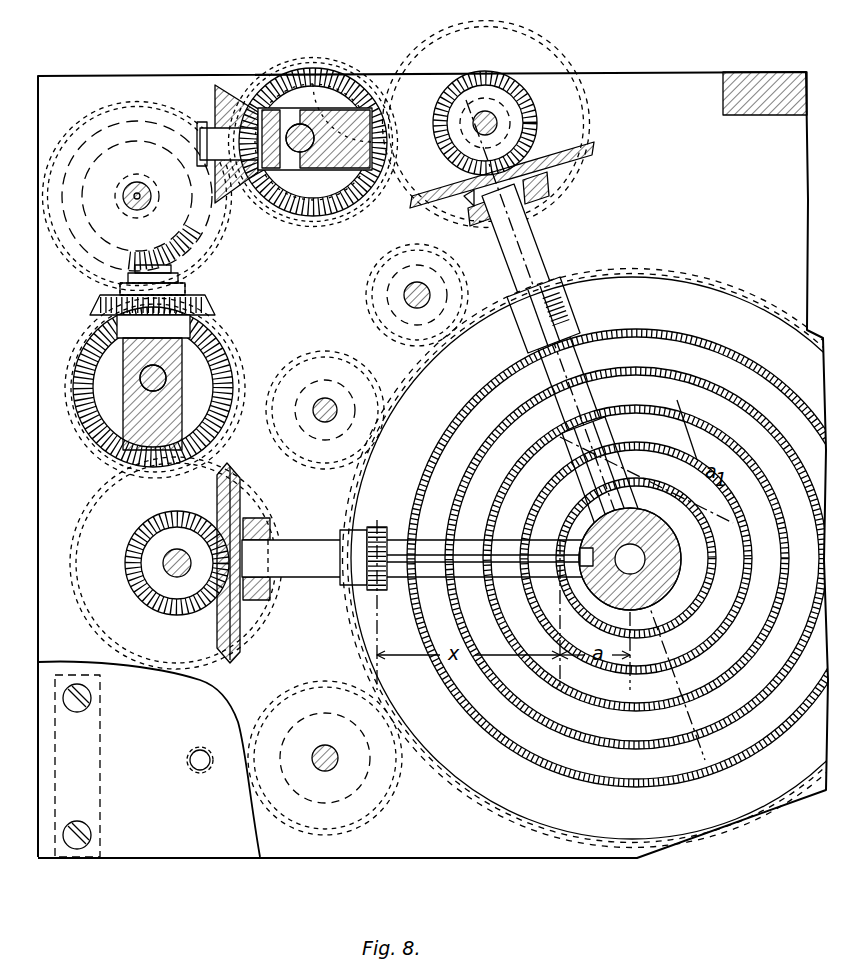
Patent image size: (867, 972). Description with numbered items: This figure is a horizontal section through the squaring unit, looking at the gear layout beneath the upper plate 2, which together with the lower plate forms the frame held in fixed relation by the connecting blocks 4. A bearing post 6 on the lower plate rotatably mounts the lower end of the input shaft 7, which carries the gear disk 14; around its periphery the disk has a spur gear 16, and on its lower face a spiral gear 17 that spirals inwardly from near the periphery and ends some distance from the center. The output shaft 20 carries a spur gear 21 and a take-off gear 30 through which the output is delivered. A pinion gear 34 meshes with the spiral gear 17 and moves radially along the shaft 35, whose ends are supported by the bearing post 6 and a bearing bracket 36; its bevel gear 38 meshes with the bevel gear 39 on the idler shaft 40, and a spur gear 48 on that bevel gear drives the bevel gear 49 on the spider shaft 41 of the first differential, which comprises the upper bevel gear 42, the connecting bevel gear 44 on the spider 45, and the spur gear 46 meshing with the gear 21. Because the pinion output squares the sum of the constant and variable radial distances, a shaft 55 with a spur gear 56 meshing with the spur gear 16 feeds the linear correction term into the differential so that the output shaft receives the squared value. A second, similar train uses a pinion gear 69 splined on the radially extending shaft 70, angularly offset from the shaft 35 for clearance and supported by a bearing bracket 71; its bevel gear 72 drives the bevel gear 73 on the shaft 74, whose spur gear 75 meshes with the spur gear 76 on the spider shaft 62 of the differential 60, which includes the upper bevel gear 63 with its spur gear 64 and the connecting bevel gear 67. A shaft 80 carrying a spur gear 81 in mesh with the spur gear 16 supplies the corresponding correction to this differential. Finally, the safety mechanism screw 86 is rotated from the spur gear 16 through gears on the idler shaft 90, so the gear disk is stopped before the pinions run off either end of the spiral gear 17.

The upper plate 2 is at (152, 850).
The connecting blocks 4 is at (110, 862).
The bearing post 6 is at (686, 580).
The input shaft 7 is at (640, 560).
The gear disk 14 is at (712, 292).
The spur gear 16 is at (764, 296).
The spiral gear 17 is at (720, 600).
The output shaft 20 is at (131, 190).
The spur gear 21 is at (92, 118).
The take-off gear 30 is at (138, 122).
The pinion gear 34 is at (346, 548).
The shaft 35 is at (310, 576).
The bearing bracket 36 is at (268, 602).
The bevel gear 38 is at (242, 650).
The bevel gear 39 is at (150, 608).
The idler shaft 40 is at (170, 570).
The spider shaft 41 is at (170, 372).
The upper bevel gear 42 is at (236, 350).
The connecting bevel gear 44 is at (207, 292).
The spider 45 is at (130, 400).
The spur gear 46 is at (232, 302).
The spur gear 48 is at (92, 618).
The bevel gear 49 is at (238, 326).
The shaft 55 is at (322, 400).
The spur gear 56 is at (330, 366).
The differential 60 is at (260, 62).
The spider shaft 62 is at (318, 112).
The upper bevel gear 63 is at (292, 64).
The spur gear 64 is at (352, 214).
The connecting bevel gear 67 is at (212, 84).
The pinion gear 69 is at (518, 322).
The shaft 70 is at (540, 234).
The bearing bracket 71 is at (548, 202).
The bevel gear 72 is at (598, 152).
The bevel gear 73 is at (532, 115).
The shaft 74 is at (492, 118).
The spur gear 75 is at (558, 56).
The spur gear 76 is at (332, 66).
The shaft 80 is at (410, 292).
The spur gear 81 is at (438, 256).
The screw 86 is at (193, 752).
The idler shaft 90 is at (325, 746).